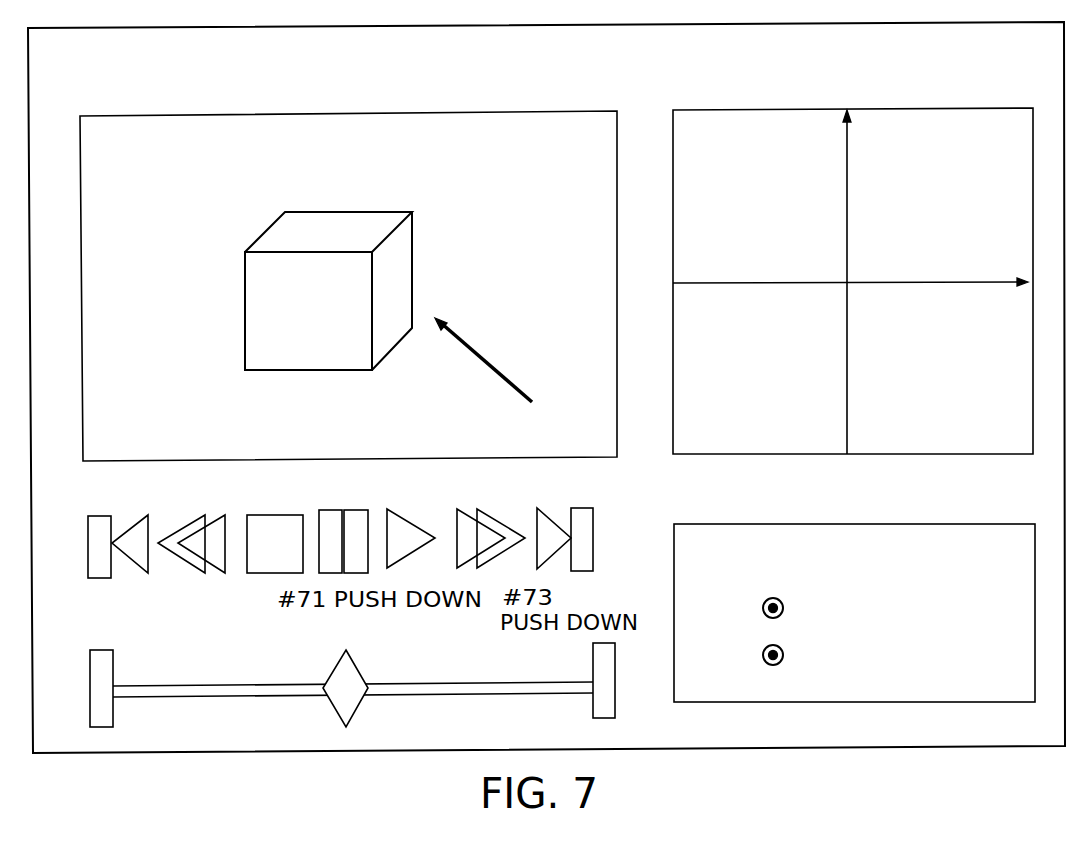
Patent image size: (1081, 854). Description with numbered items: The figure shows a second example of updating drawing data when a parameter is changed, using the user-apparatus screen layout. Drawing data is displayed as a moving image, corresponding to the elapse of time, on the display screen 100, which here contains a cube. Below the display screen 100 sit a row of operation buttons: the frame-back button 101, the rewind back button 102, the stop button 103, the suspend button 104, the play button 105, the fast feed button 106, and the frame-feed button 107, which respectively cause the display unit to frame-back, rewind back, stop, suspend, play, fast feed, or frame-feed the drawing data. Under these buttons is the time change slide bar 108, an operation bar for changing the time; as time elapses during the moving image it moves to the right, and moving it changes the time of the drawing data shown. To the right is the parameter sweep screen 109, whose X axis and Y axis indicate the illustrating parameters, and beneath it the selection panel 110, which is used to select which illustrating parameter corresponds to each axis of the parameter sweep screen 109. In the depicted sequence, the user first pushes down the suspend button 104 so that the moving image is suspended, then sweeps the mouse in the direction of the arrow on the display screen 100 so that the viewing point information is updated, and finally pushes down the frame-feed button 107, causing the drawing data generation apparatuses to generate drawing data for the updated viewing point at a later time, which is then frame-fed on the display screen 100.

The display screen 100 is at (565, 110).
The frame-back button 101 is at (122, 528).
The rewind back button 102 is at (212, 517).
The stop button 103 is at (277, 514).
The suspend button 104 is at (347, 509).
The play button 105 is at (408, 518).
The fast feed button 106 is at (490, 514).
The frame-feed button 107 is at (578, 507).
The time change slide bar 108 is at (358, 667).
The parameter sweep screen 109 is at (713, 109).
The selection panel 110 is at (693, 523).